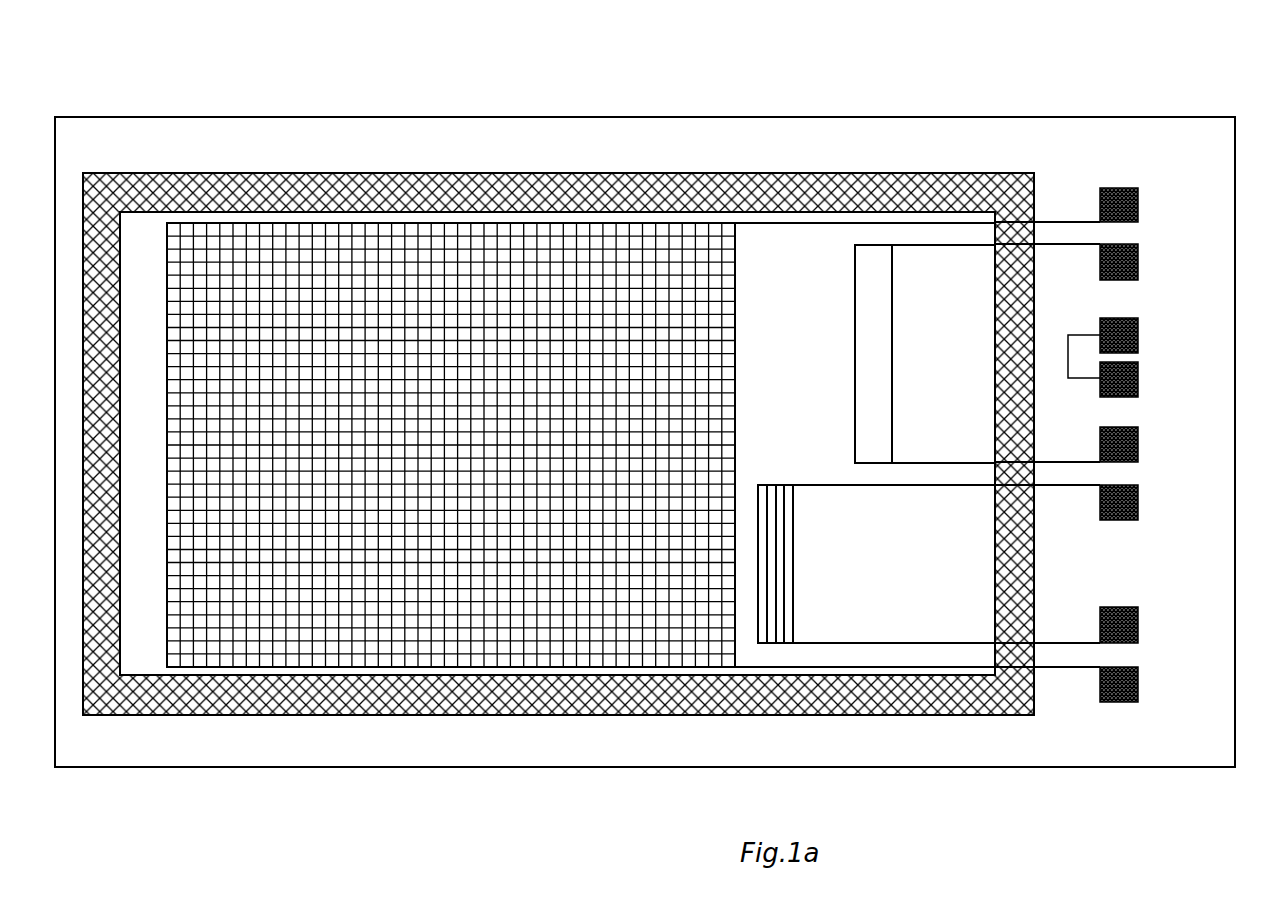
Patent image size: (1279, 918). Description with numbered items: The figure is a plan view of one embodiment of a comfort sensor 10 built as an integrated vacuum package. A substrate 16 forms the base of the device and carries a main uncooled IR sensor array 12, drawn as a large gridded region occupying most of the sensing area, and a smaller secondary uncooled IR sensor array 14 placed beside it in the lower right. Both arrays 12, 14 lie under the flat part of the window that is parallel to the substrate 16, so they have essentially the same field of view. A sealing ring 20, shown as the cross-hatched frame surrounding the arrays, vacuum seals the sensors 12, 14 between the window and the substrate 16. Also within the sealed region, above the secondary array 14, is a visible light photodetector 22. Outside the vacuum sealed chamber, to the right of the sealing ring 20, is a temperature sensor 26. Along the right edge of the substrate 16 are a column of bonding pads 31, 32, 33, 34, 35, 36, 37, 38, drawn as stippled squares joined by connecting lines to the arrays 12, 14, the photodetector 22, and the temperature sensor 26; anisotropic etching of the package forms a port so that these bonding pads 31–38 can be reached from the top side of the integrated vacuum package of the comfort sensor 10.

The comfort sensor 10 is at (724, 102).
The main uncooled IR sensor array 12 is at (333, 233).
The secondary uncooled IR sensor array 14 is at (780, 485).
The substrate 16 is at (1208, 118).
The sealing ring 20 is at (310, 695).
The visible light photodetector 22 is at (892, 380).
The temperature sensor 26 is at (1068, 348).
The bonding pad 31 is at (1138, 205).
The bonding pad 32 is at (1138, 685).
The bonding pad 33 is at (1138, 506).
The bonding pad 34 is at (1138, 615).
The bonding pad 35 is at (1138, 262).
The bonding pad 36 is at (1138, 445).
The bonding pad 37 is at (1138, 336).
The bonding pad 38 is at (1138, 383).